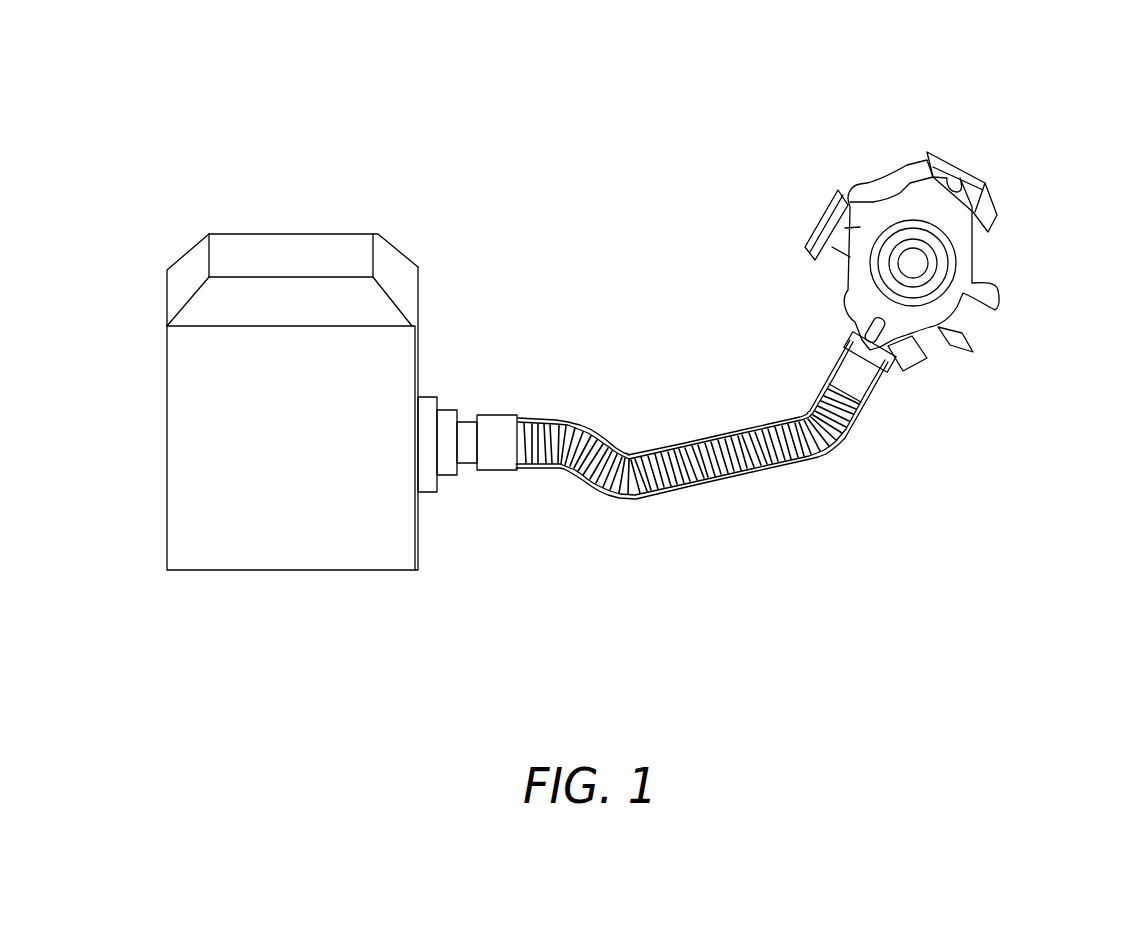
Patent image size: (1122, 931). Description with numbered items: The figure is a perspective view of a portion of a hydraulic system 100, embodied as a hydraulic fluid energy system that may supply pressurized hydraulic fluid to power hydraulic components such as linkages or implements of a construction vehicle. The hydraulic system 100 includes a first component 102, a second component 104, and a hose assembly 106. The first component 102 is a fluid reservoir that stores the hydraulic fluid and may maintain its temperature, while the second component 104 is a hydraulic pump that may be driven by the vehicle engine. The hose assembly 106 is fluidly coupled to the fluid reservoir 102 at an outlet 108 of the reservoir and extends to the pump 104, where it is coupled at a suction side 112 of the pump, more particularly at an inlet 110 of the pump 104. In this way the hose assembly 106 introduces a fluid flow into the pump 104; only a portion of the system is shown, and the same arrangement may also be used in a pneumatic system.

The hydraulic system 100 is at (368, 115).
The first component 102 is at (307, 555).
The second component 104 is at (997, 257).
The hose assembly 106 is at (800, 513).
The outlet 108 is at (418, 493).
The inlet 110 is at (890, 356).
The suction side 112 is at (828, 334).